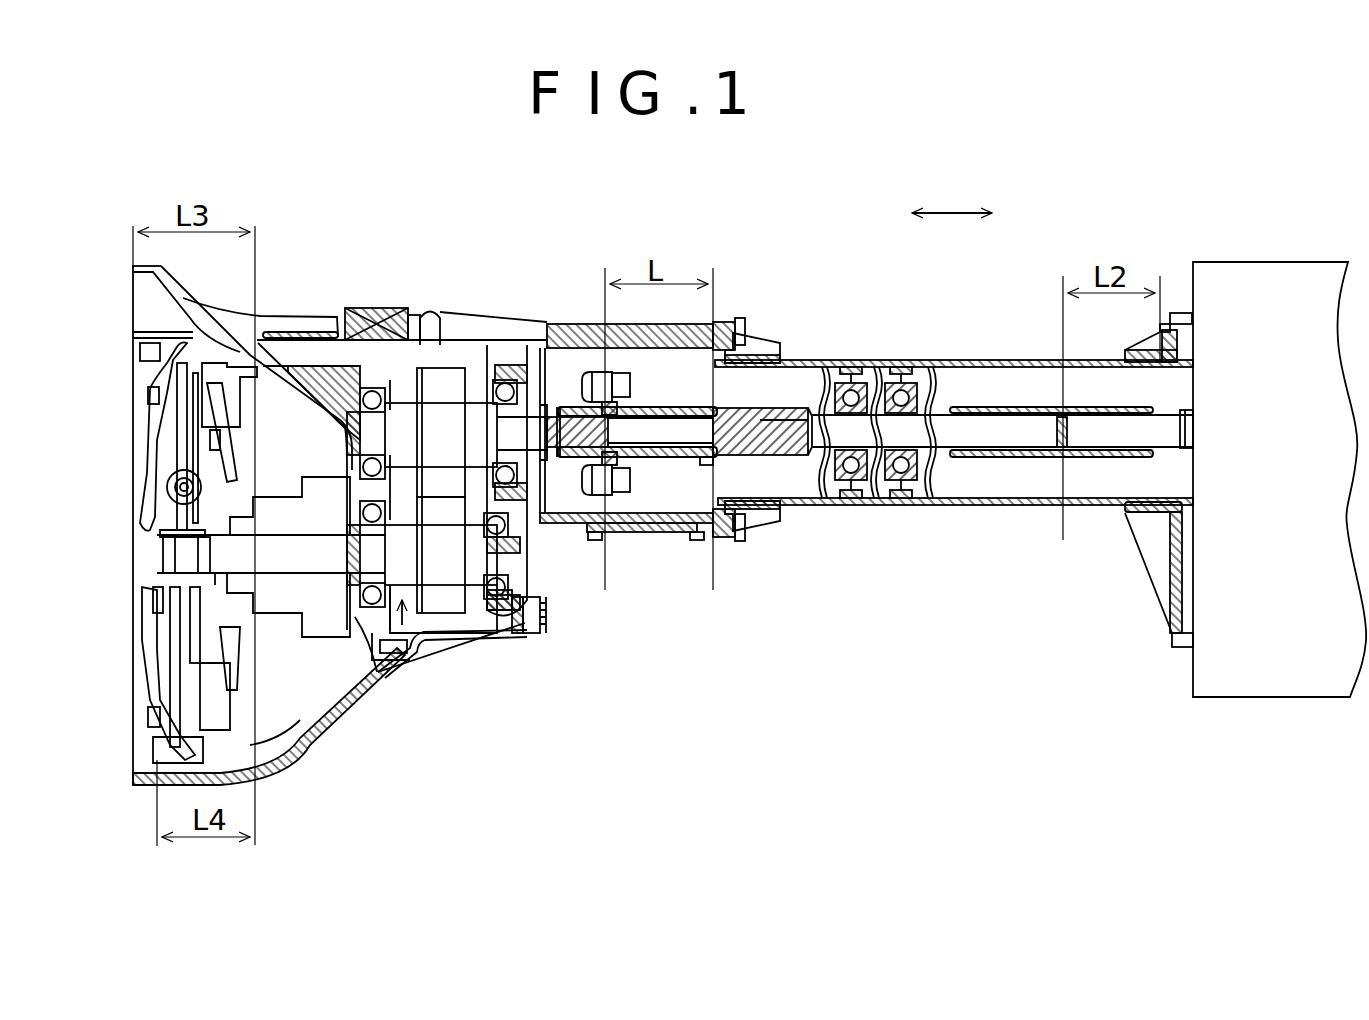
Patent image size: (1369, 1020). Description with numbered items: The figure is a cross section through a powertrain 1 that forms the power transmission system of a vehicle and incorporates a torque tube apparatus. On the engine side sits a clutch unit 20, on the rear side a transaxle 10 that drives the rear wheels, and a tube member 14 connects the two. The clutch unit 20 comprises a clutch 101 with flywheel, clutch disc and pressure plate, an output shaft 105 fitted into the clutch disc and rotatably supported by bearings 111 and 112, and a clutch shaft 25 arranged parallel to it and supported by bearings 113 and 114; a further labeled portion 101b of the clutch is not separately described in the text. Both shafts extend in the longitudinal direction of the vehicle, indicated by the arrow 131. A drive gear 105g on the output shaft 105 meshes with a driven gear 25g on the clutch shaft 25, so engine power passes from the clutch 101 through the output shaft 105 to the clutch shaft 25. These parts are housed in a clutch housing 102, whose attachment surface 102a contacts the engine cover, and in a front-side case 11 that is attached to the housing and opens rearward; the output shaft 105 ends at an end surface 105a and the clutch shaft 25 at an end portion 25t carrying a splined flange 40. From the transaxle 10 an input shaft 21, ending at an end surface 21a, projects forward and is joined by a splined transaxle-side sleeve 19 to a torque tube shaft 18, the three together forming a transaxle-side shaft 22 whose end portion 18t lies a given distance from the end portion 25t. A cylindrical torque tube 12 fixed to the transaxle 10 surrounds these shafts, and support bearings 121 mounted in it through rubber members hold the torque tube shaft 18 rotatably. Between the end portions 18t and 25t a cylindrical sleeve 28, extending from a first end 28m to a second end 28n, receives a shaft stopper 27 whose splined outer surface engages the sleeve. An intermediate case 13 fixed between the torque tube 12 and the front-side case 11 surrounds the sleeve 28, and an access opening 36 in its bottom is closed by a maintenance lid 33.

The powertrain 1 is at (257, 183).
The transaxle 10 is at (1282, 245).
The front-side case 11 is at (580, 324).
The torque tube 12 is at (788, 340).
The intermediate case 13 is at (730, 318).
The tube member 14 is at (810, 260).
The torque tube shaft 18 is at (937, 433).
The end portion 18t is at (737, 456).
The transaxle-side sleeve 19 is at (983, 403).
The clutch unit 20 is at (325, 257).
The input shaft 21 is at (1048, 427).
The end surface 21a is at (1027, 460).
The transaxle-side shaft 22 is at (1053, 283).
The clutch shaft 25 is at (477, 390).
The driven gear 25g is at (445, 385).
The end portion 25t is at (555, 467).
The shaft stopper 27 is at (690, 457).
The sleeve 28 is at (670, 457).
The first end 28m is at (795, 460).
The second end 28n is at (640, 457).
The maintenance lid 33 is at (608, 465).
The access opening 36 is at (700, 460).
The flange 40 is at (583, 467).
The clutch 101 is at (147, 647).
The case bottom wall 101b is at (292, 748).
The clutch housing 102 is at (333, 710).
The attachment surface 102a is at (132, 358).
The output shaft 105 is at (427, 660).
The end surface 105a is at (157, 553).
The drive gear 105g is at (442, 587).
The bearing 111 is at (512, 632).
The bearing 112 is at (370, 653).
The bearing 113 is at (515, 380).
The bearing 114 is at (368, 393).
The support bearing 121 is at (842, 380).
The arrow 131 is at (953, 210).